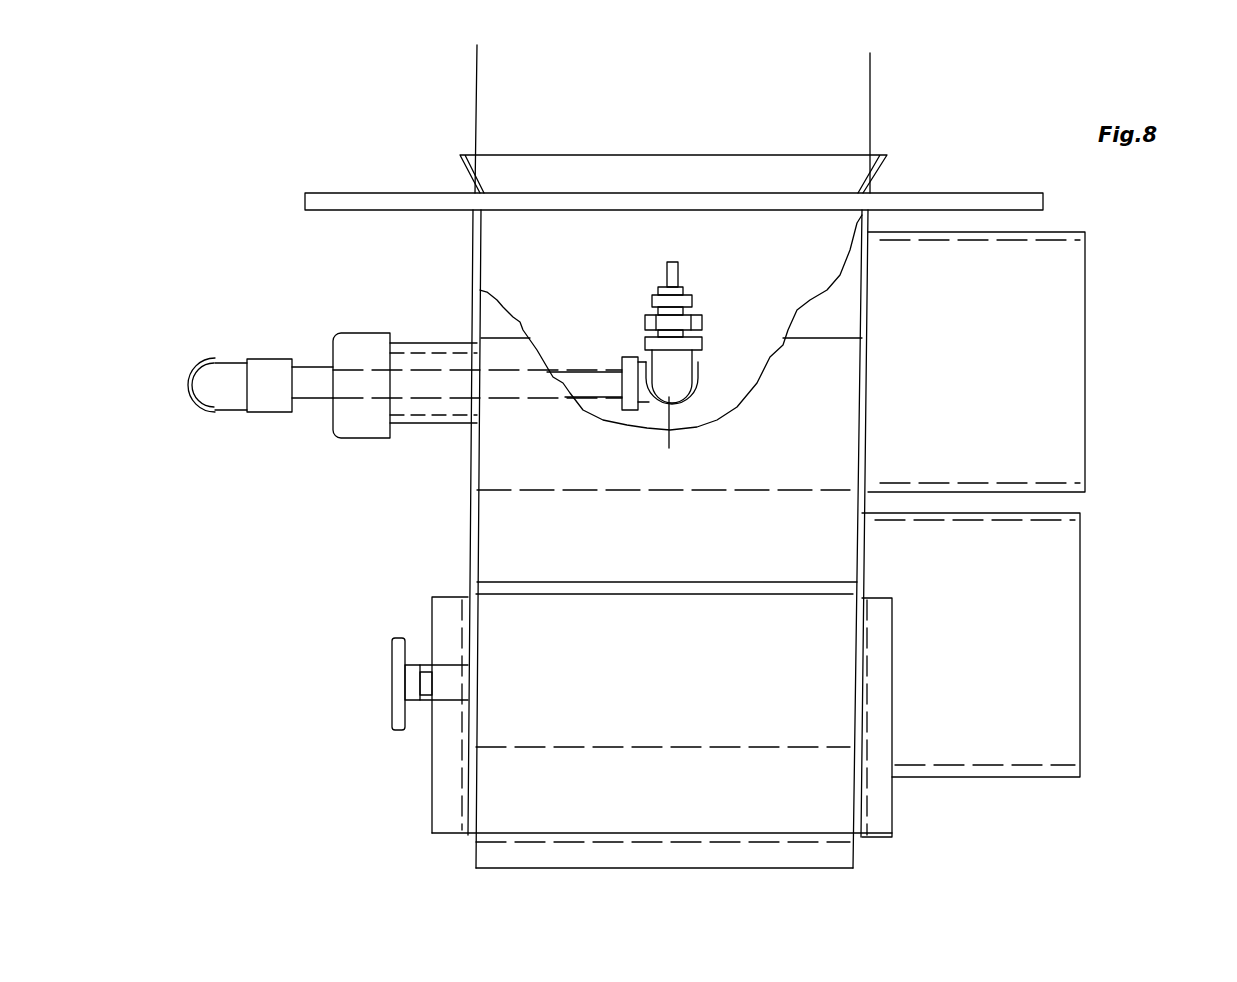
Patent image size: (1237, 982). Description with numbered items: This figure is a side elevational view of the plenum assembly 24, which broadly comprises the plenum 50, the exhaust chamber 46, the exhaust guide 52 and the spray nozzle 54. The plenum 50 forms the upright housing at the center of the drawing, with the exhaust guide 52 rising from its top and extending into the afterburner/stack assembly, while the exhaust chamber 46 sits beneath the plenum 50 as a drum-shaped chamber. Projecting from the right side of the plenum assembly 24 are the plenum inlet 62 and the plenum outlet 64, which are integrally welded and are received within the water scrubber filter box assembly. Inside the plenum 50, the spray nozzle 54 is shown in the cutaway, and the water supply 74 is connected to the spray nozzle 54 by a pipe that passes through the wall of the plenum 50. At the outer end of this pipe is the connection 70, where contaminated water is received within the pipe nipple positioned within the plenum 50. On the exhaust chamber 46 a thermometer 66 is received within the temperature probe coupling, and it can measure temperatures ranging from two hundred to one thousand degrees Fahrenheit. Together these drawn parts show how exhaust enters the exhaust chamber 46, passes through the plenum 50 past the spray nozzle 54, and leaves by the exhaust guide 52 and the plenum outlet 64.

The plenum assembly 24 is at (1100, 475).
The exhaust chamber 46 is at (508, 786).
The plenum 50 is at (516, 455).
The exhaust guide 52 is at (820, 180).
The spray nozzle 54 is at (700, 295).
The plenum inlet 62 is at (1055, 330).
The plenum outlet 64 is at (1045, 725).
The thermometer 66 is at (402, 703).
The connection 70 is at (193, 410).
The water supply 74 is at (312, 390).